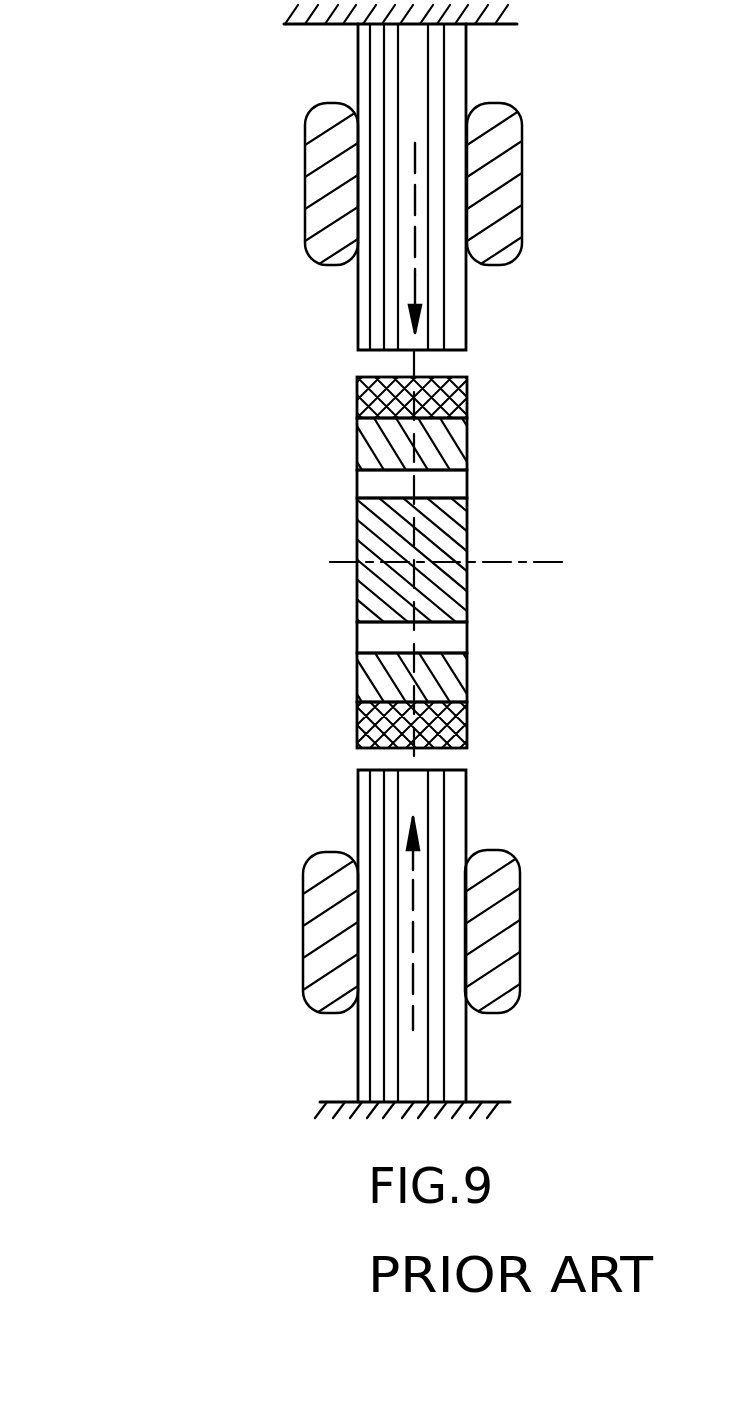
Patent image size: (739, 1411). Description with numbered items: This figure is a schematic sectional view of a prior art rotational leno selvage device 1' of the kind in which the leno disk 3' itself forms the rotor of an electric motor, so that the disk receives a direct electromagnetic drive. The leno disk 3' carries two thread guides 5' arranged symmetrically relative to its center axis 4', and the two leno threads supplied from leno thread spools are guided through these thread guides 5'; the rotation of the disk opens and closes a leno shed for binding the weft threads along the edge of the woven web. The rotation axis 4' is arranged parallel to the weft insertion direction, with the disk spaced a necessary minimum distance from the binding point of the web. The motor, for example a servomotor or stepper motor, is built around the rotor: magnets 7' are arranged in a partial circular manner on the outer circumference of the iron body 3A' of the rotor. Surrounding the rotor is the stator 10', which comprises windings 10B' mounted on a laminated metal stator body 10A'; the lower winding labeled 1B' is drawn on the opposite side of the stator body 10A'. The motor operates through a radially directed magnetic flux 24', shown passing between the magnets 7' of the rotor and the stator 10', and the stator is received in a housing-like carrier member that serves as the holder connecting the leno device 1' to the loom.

The rotational leno selvage device 1' is at (324, 559).
The leno disk 3' is at (405, 555).
The iron body 3A' is at (443, 560).
The center axis 4' is at (425, 590).
The thread guides 5' is at (442, 565).
The magnets 7' is at (429, 559).
The stator 10' is at (364, 561).
The laminated metal stator body 10A' is at (465, 563).
The windings 10B' is at (462, 175).
The lower coil 1B' is at (446, 923).
The radial magnetic flux 24' is at (482, 586).